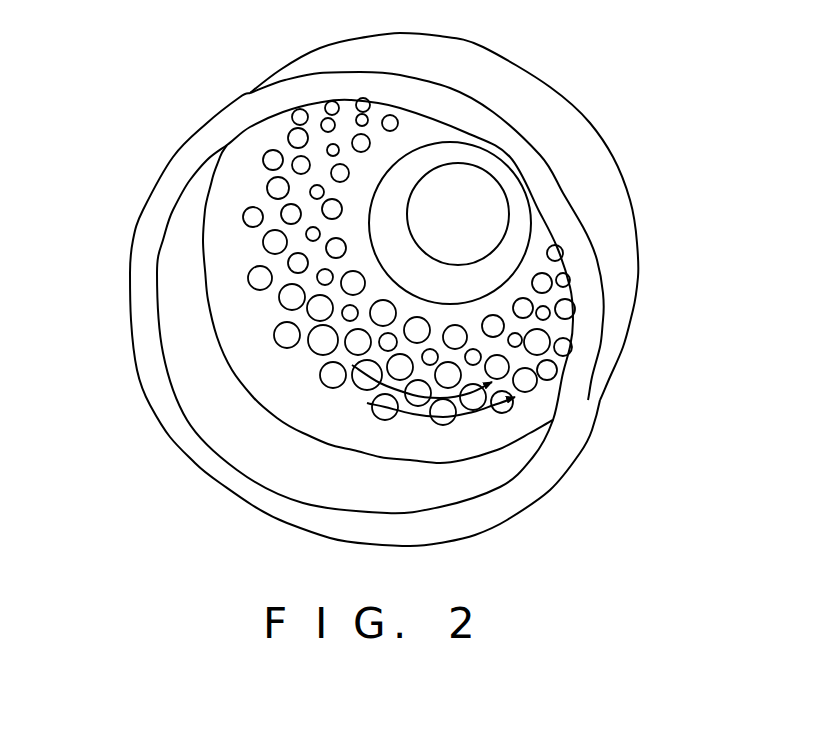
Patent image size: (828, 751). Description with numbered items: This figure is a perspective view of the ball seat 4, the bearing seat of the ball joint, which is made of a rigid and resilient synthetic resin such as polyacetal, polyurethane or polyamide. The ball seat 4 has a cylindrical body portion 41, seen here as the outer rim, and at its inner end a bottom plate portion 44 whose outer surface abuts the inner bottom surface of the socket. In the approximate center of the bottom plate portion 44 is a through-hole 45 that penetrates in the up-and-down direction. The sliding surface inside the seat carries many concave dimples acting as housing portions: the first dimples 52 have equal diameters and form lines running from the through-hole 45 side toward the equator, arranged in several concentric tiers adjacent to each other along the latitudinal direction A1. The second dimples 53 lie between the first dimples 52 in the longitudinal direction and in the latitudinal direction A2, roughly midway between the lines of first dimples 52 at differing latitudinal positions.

The ball seat 4 is at (489, 47).
The body portion 41 is at (555, 113).
The bottom plate portion 44 is at (395, 243).
The through-hole 45 is at (460, 262).
The first dimples 52 is at (321, 396).
The second dimples 53 is at (309, 356).
The latitudinal direction A1 is at (418, 415).
The latitudinal direction A2 is at (462, 403).